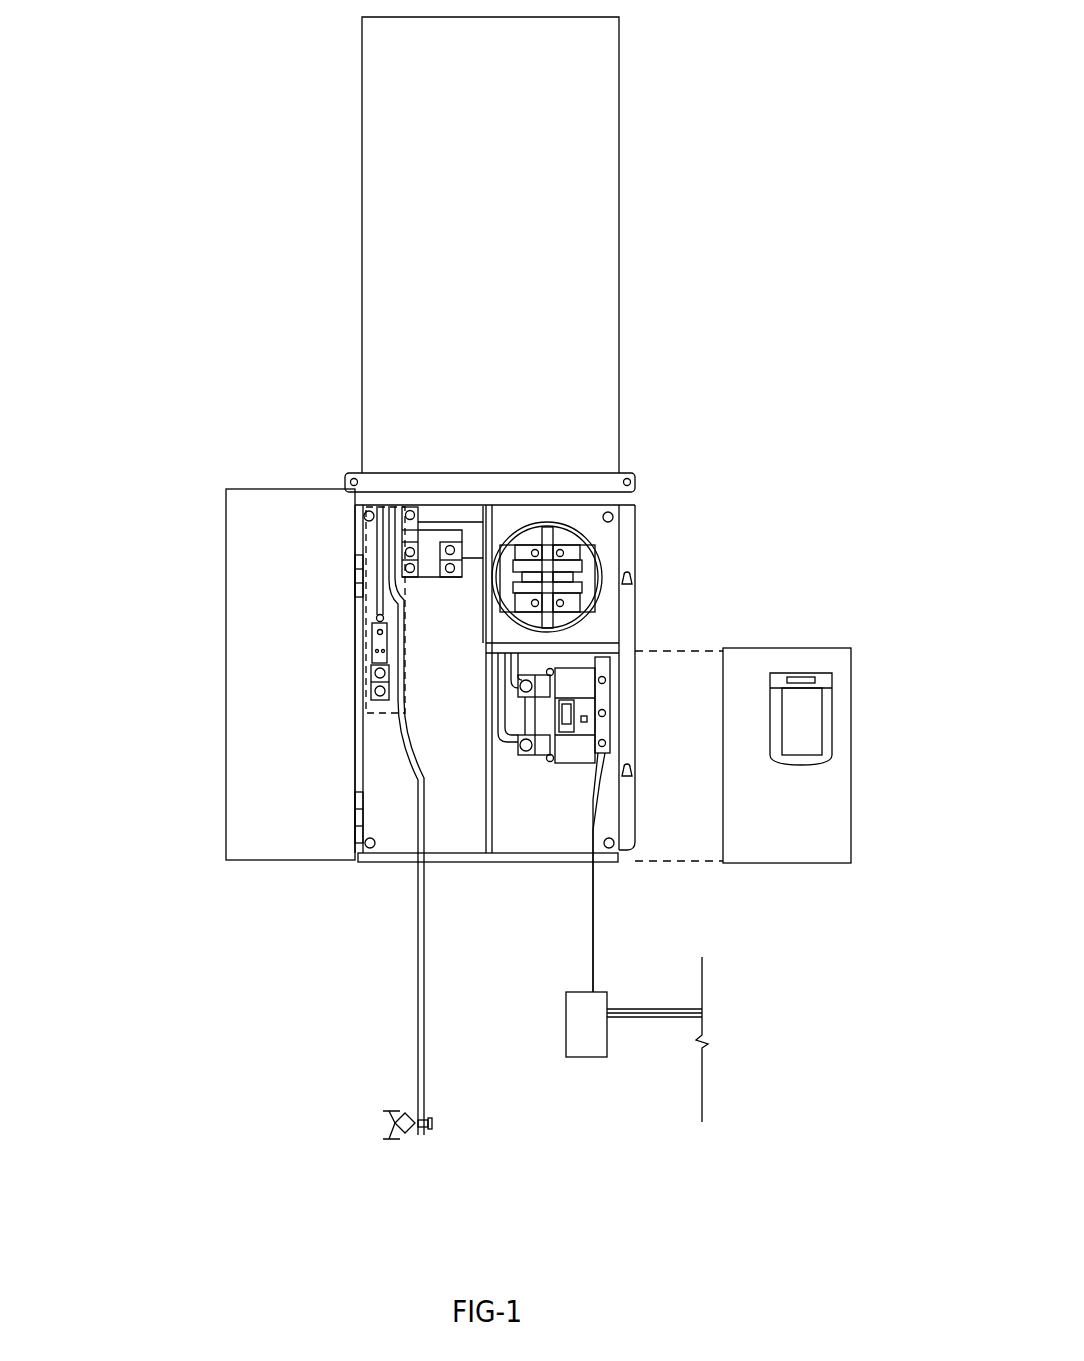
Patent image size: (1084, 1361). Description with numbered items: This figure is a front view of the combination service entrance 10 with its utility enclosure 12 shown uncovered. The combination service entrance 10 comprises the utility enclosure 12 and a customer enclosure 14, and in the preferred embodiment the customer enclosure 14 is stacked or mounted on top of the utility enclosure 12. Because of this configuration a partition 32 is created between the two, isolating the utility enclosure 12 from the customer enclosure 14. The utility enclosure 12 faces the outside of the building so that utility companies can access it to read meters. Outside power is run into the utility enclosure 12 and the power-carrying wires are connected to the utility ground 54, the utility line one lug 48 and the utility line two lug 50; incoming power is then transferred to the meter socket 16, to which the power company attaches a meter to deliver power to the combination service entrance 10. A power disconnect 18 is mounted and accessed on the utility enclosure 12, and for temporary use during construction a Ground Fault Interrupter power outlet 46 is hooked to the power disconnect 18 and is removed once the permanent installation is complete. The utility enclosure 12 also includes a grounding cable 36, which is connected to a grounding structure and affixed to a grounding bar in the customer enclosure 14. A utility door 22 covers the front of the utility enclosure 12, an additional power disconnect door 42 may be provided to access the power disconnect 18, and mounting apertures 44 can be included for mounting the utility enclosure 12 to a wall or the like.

The combination service entrance 10 is at (680, 245).
The utility enclosure 12 is at (628, 540).
The customer enclosure 14 is at (580, 108).
The meter socket 16 is at (602, 577).
The power disconnect 18 is at (573, 680).
The utility door 22 is at (270, 733).
The partition 32 is at (390, 483).
The grounding cable 36 is at (416, 1028).
The power disconnect door 42 is at (818, 812).
The mounting apertures 44 is at (365, 514).
The Ground Fault Interrupter (GFI) power outlet 46 is at (590, 1024).
The utility line 1 lug 48 is at (407, 552).
The utility line 2 lug 50 is at (446, 568).
The utility ground 54 is at (372, 655).